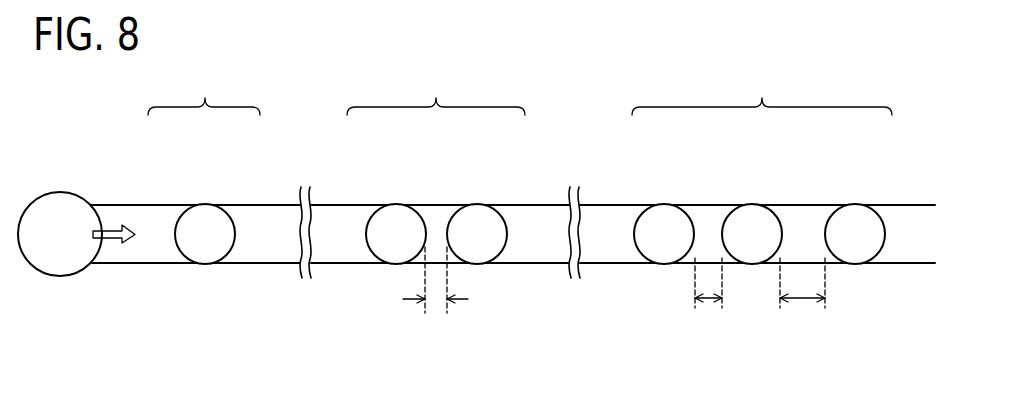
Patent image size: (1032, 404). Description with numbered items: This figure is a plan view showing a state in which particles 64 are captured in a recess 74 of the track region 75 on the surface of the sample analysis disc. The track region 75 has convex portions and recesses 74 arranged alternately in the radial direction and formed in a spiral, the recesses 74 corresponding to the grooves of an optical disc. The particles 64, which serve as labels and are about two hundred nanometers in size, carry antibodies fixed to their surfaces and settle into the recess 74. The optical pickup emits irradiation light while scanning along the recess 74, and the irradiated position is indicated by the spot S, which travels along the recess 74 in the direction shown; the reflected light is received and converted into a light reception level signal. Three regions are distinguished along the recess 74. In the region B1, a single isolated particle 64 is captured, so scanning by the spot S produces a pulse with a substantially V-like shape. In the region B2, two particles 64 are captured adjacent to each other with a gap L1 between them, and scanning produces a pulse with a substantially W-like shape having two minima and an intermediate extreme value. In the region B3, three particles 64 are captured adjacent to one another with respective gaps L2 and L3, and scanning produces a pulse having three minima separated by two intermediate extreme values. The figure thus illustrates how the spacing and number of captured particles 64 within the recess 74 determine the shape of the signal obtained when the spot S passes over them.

The spot S is at (62, 192).
The particle 64 is at (228, 204).
The recess 74 is at (907, 252).
The track region 75 is at (512, 304).
The region B1 is at (204, 91).
The region B2 is at (436, 92).
The region B3 is at (762, 92).
The gap L1 is at (435, 290).
The gap L2 is at (709, 295).
The gap L3 is at (802, 295).